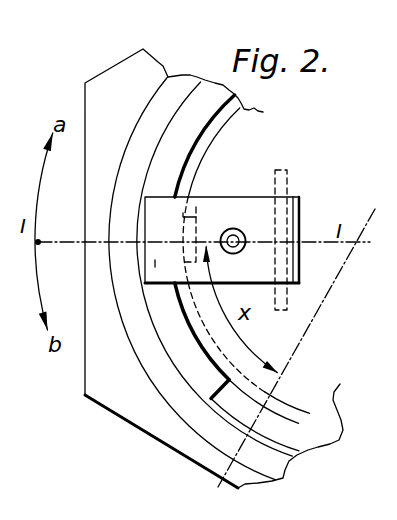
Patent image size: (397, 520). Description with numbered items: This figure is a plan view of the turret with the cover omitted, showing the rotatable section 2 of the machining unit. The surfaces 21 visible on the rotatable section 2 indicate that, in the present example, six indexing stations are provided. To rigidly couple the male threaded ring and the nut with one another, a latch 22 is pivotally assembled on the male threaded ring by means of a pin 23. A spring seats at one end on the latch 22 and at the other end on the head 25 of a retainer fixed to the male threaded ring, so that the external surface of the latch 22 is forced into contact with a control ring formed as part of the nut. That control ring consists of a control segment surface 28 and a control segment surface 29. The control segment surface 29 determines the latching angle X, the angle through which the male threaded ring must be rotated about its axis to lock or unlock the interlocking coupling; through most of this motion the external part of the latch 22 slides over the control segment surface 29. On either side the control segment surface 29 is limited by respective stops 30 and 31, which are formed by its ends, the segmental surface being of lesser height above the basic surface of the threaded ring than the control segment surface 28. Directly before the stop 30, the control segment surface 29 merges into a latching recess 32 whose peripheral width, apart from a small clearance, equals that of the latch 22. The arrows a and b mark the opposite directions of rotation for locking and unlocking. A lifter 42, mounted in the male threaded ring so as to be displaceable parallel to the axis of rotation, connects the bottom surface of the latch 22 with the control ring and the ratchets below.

The rotatable section 2 is at (97, 367).
The surfaces 21 is at (110, 412).
The latch 22 is at (156, 263).
The pin 23 is at (280, 173).
The head 25 is at (231, 229).
The control segment surface 28 is at (318, 444).
The control segment surface 29 is at (200, 120).
The stop 30 is at (313, 418).
The stop 31 is at (159, 192).
The latching recess 32 is at (282, 458).
The lifter 42 is at (190, 216).